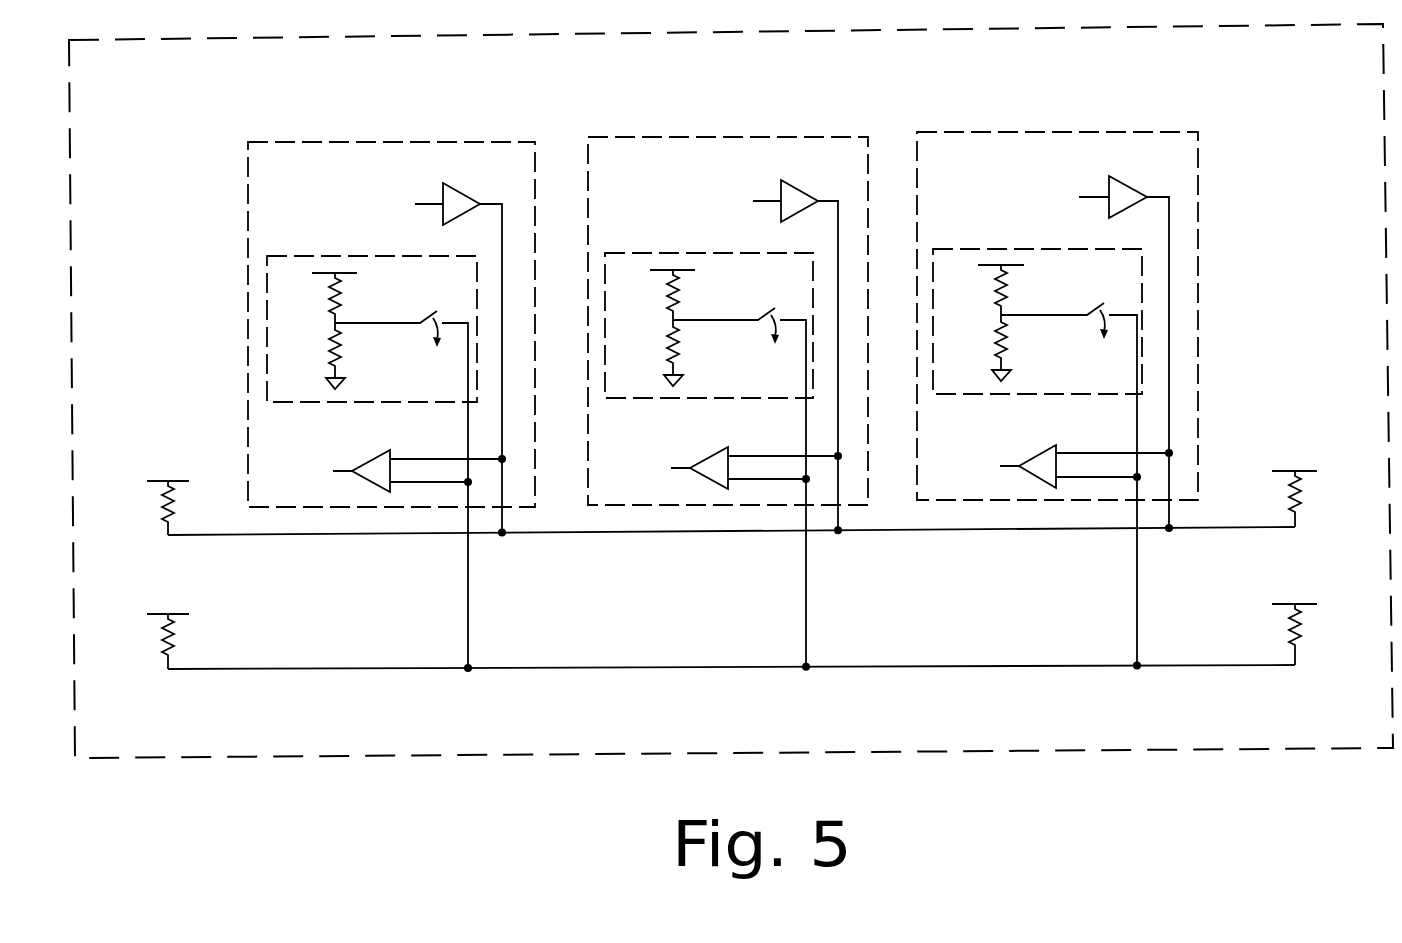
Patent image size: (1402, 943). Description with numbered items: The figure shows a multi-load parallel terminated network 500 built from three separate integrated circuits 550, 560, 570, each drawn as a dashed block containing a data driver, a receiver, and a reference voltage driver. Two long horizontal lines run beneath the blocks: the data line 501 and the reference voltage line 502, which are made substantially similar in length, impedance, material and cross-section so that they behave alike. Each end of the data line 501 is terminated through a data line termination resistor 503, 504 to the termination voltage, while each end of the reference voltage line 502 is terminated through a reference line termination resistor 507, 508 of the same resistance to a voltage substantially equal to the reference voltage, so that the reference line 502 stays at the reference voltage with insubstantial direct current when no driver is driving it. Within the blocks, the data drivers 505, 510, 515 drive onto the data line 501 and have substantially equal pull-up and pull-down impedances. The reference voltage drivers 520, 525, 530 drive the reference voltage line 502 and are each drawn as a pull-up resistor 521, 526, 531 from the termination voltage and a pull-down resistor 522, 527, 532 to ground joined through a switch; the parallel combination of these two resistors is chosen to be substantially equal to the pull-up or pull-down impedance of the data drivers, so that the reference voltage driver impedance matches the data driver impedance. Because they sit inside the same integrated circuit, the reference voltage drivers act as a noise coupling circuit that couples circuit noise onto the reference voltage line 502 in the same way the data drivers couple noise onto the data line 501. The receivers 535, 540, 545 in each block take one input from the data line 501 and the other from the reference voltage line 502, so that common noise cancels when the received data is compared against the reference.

The network 500 is at (341, 754).
The data line 501 is at (570, 535).
The reference voltage line 502 is at (570, 668).
The data line termination resistor 503 is at (178, 510).
The data line termination resistor 504 is at (1285, 501).
The data driver 505 is at (462, 192).
The reference line termination resistor 507 is at (178, 645).
The reference line termination resistor 508 is at (1287, 636).
The data driver 510 is at (800, 189).
The data driver 515 is at (1128, 185).
The reference voltage driver 520 is at (432, 256).
The pull-up resistor Rup" 521 is at (329, 294).
The pull-down resistor Rdn" 522 is at (329, 347).
The reference voltage driver 525 is at (770, 253).
The pull-up resistor Rup" 526 is at (667, 291).
The pull-down resistor Rdn" 527 is at (667, 344).
The reference voltage driver 530 is at (1098, 249).
The pull-up resistor Rup" 531 is at (995, 286).
The pull-down resistor Rdn" 532 is at (995, 339).
The receiver 535 is at (373, 457).
The receiver 540 is at (711, 454).
The receiver 545 is at (1040, 452).
The integrated circuit 550 is at (370, 141).
The integrated circuit 560 is at (708, 137).
The integrated circuit 570 is at (1036, 132).